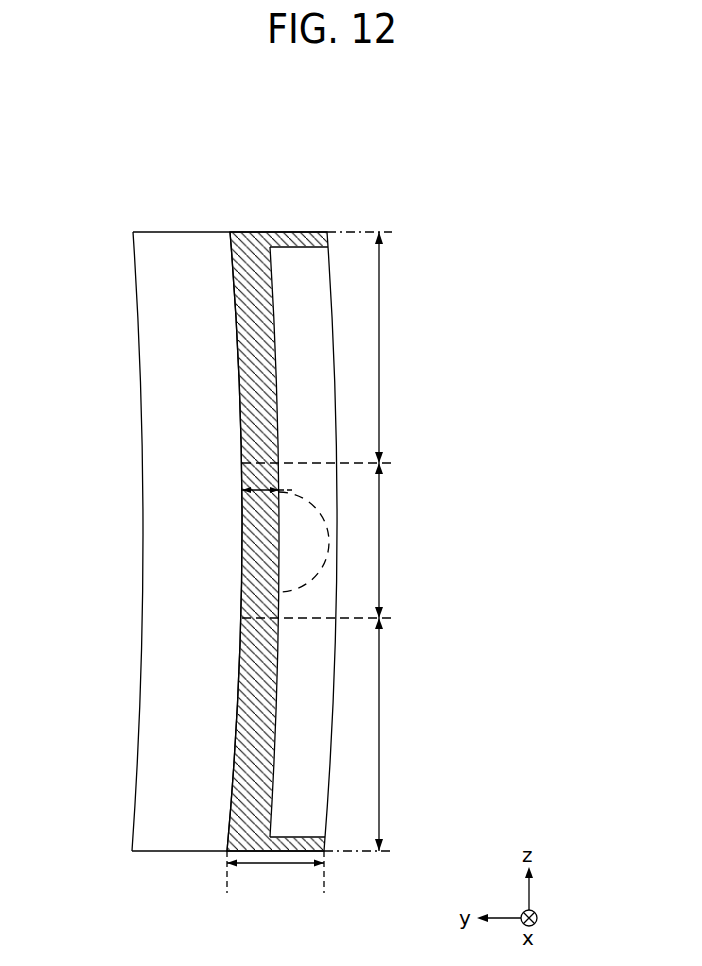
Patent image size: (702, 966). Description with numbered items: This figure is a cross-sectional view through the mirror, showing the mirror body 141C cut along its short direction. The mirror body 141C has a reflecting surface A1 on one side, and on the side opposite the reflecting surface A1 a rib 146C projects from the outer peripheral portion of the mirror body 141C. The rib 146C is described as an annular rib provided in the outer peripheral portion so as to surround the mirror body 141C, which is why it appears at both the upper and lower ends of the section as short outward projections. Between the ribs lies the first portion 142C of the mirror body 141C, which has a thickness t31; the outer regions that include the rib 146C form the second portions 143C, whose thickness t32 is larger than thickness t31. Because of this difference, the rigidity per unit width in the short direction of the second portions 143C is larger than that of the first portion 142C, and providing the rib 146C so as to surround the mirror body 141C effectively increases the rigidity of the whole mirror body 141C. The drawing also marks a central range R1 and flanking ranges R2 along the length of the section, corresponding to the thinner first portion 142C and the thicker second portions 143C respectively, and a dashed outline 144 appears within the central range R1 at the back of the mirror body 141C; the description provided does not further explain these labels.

The mirror body 141C is at (148, 265).
The first portion 142C is at (255, 597).
The second portions 143C is at (245, 335).
The hole / recess (dashed) 144 is at (285, 541).
The rib 146C is at (296, 240).
The reflecting surface A1 is at (232, 414).
The thickness of first portion t31 is at (262, 489).
The thickness of second portions t32 is at (275, 872).
The range R1 is at (331, 540).
The range R2 is at (372, 541).